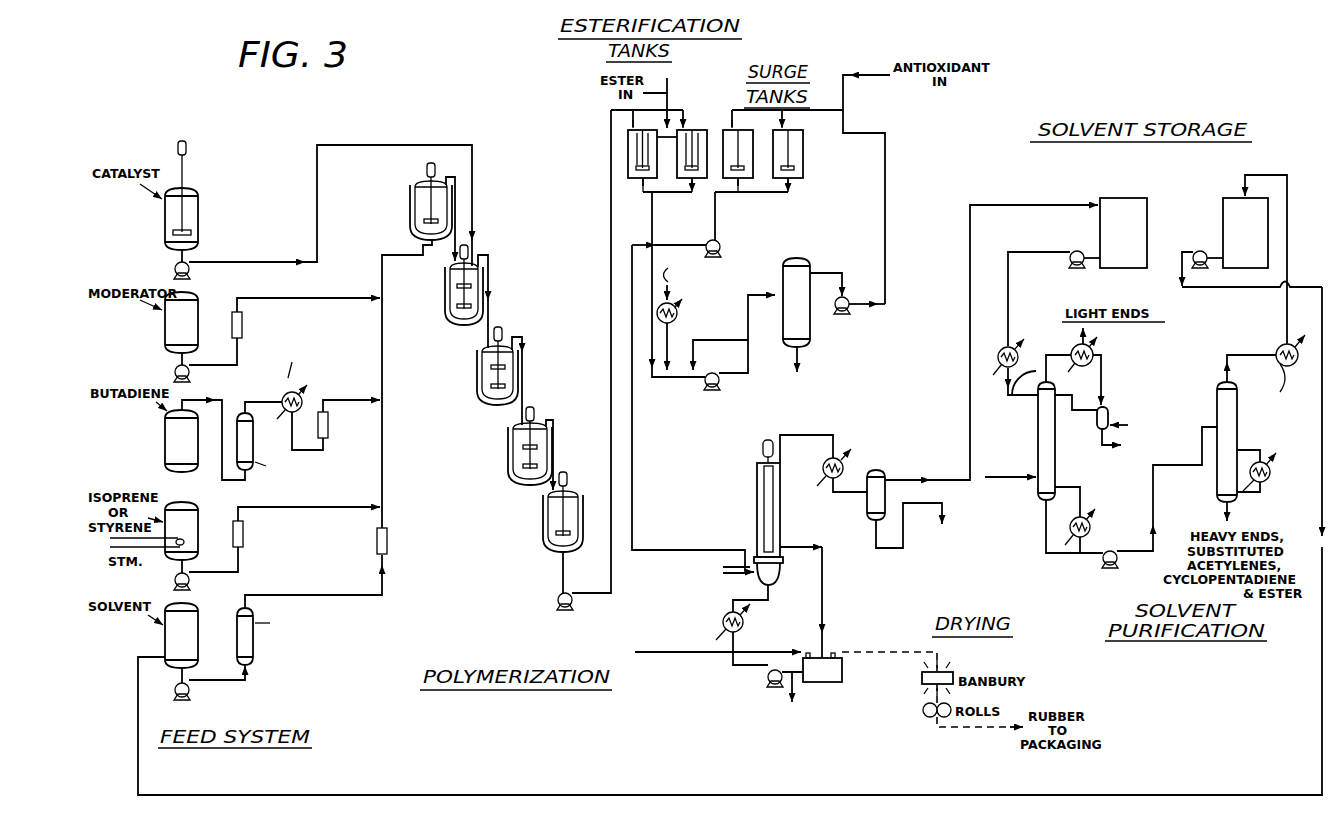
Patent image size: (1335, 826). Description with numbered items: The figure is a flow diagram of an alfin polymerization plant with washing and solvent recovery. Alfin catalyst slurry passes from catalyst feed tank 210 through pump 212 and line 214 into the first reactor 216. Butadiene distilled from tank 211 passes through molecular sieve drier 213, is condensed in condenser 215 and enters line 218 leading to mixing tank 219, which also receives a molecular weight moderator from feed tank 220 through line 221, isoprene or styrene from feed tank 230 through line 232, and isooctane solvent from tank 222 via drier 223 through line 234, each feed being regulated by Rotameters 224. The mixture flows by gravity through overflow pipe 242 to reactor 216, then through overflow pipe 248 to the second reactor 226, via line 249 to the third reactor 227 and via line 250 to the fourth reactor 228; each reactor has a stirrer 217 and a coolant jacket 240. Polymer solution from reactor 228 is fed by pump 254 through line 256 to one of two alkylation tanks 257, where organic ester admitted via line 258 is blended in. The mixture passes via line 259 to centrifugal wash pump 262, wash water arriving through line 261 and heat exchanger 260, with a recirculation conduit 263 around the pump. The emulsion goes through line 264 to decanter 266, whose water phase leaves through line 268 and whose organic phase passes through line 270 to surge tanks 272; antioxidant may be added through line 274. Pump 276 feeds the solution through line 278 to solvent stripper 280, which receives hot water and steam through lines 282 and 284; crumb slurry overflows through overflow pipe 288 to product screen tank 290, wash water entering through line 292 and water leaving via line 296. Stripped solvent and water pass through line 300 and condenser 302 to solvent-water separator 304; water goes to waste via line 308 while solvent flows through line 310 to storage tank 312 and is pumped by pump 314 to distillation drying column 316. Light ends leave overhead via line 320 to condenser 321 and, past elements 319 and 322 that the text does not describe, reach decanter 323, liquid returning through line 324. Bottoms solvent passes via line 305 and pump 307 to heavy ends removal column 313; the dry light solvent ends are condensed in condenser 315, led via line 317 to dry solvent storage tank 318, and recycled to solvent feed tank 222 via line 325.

The catalyst feed tank 210 is at (198, 215).
The pump 212 is at (174, 268).
The line 214 is at (362, 144).
The feed tank 220 is at (198, 302).
The line 221 is at (292, 297).
The Rotameters 224 is at (243, 325).
The tank 211 is at (163, 428).
The condenser 215 is at (285, 403).
The molecular sieve drier 213 is at (262, 440).
The feed tank 230 is at (198, 518).
The line 232 is at (240, 556).
The solvent feed tank 222 is at (198, 616).
The drier 223 is at (254, 650).
The line 234 is at (338, 595).
The line 218 is at (384, 455).
The jacket 240 is at (410, 194).
The mixing tank 219 is at (415, 208).
The overflow pipe 242 is at (456, 183).
The stirrer 217 is at (446, 232).
The first reactor 216 is at (450, 306).
The overflow pipe 248 is at (490, 300).
The second reactor 226 is at (482, 378).
The line 249 is at (524, 378).
The third reactor 227 is at (513, 468).
The line 250 is at (555, 428).
The fourth reactor 228 is at (548, 543).
The pump 254 is at (557, 600).
The line 256 is at (611, 222).
The alkylation tanks 257 is at (627, 148).
The line 258 is at (668, 98).
The line 259 is at (653, 221).
The line 261 is at (678, 311).
The pump 276 is at (719, 245).
The heat exchanger 260 is at (678, 314).
The recirculation conduit 263 is at (738, 341).
The centrifugal wash pump 262 is at (705, 386).
The line 264 is at (749, 352).
The decanter 266 is at (800, 260).
The line 268 is at (800, 369).
The line 270 is at (833, 278).
The product solution surge tanks 272 is at (804, 159).
The line 274 is at (853, 102).
The line 278 is at (674, 549).
The solvent stripper 280 is at (781, 520).
The line 282 is at (770, 597).
The line 284 is at (724, 573).
The overflow pipe 288 is at (824, 552).
The product screen tank 290 is at (828, 652).
The line 292 is at (764, 648).
The line 296 is at (757, 669).
The line 300 is at (815, 434).
The condenser 302 is at (843, 466).
The solvent-water separator 304 is at (890, 476).
The line 308 is at (887, 552).
The line 310 is at (971, 484).
The storage tank 312 is at (1123, 197).
The wet solvent pump 314 is at (1069, 257).
The distillation drying column 316 is at (1037, 436).
The dry solvent storage tank 318 is at (1222, 200).
The line 317 is at (1289, 246).
The drier overhead condenser 319 is at (1071, 350).
The line 320 is at (1019, 403).
The condenser 321 is at (1096, 351).
The condensate line 322 is at (1103, 380).
The decanter 323 is at (1110, 410).
The line 324 is at (1080, 418).
The line 305 is at (1037, 521).
The pump 307 is at (1120, 560).
The heavy ends removal column 313 is at (1238, 426).
The condenser 315 is at (1282, 380).
The line 325 is at (1320, 690).